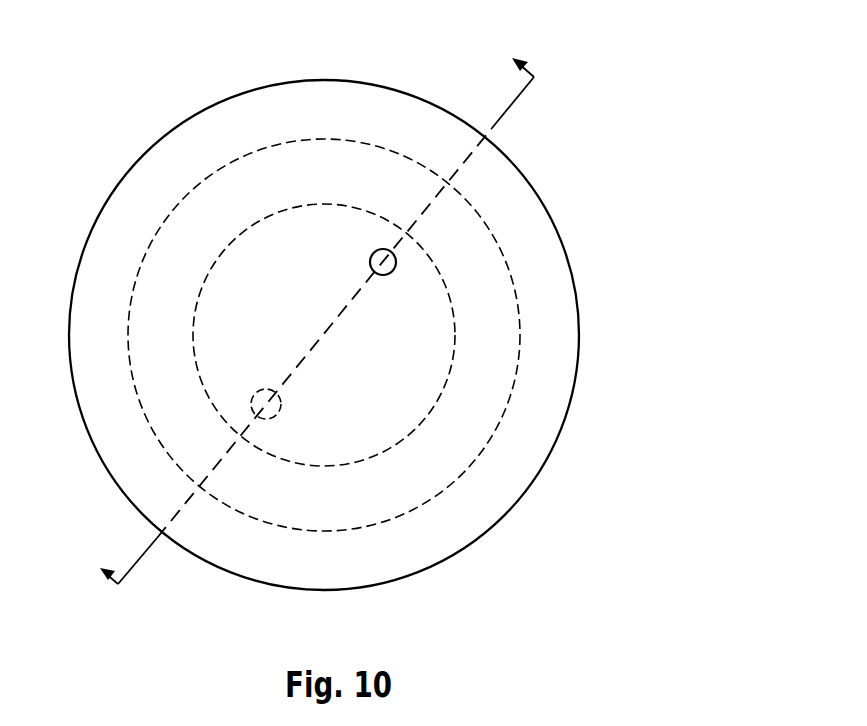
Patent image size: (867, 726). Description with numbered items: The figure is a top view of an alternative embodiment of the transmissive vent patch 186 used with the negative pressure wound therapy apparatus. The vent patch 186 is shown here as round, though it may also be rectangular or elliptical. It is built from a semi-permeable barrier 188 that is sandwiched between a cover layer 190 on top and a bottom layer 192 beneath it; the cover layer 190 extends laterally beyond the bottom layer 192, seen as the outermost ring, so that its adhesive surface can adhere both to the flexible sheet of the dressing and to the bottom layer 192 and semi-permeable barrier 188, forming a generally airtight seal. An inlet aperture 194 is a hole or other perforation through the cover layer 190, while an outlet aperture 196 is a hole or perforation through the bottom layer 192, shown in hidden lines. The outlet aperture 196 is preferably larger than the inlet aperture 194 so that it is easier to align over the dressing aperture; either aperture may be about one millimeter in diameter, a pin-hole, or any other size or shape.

The vent patch 186 is at (180, 64).
The semi-permeable barrier 188 is at (454, 308).
The cover layer 190 is at (515, 200).
The bottom layer 192 is at (518, 375).
The inlet aperture 194 is at (370, 259).
The outlet aperture 196 is at (281, 412).